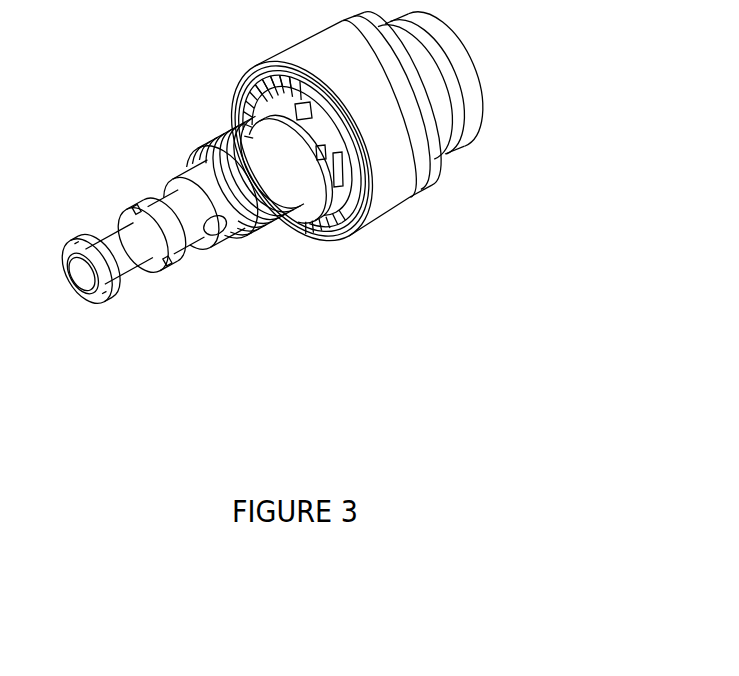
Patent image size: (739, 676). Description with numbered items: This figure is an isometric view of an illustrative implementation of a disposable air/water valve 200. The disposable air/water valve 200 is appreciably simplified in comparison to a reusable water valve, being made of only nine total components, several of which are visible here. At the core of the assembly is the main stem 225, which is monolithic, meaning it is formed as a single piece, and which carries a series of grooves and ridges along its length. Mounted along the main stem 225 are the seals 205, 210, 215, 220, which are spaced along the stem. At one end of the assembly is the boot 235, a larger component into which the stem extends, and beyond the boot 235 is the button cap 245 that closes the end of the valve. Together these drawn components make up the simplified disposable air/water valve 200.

The disposable air/water valve 200 is at (188, 139).
The seal 205 is at (106, 305).
The seal 210 is at (176, 268).
The seal 215 is at (265, 208).
The seal 220 is at (342, 218).
The main stem 225 is at (203, 182).
The boot 235 is at (387, 183).
The button cap 245 is at (468, 83).